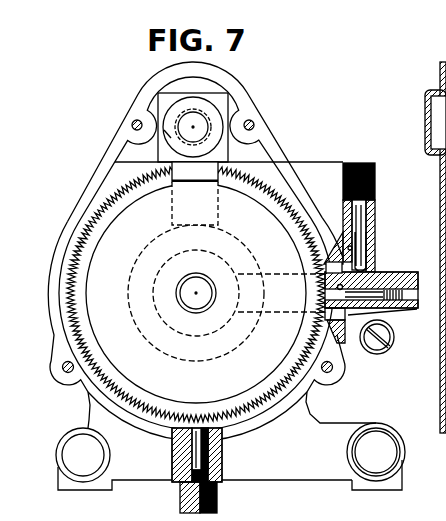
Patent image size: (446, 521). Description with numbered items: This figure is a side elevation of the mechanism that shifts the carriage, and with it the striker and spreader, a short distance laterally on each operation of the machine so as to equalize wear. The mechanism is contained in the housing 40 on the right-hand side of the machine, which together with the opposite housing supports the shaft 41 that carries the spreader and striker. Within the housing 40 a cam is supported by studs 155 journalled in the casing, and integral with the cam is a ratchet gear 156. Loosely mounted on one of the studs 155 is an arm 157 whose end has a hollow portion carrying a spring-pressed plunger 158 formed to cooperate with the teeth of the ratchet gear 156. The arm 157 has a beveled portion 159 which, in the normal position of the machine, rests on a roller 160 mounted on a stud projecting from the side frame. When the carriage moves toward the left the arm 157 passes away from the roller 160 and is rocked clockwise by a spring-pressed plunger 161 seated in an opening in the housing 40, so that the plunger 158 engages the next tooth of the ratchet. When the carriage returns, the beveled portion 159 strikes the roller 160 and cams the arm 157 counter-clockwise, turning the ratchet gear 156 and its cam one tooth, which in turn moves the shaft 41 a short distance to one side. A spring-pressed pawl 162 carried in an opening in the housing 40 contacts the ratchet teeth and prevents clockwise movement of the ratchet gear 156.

The housing 40 is at (249, 110).
The shaft 41 is at (208, 138).
The studs 155 is at (193, 297).
The ratchet gear 156 is at (287, 208).
The arm 157 is at (410, 275).
The spring-pressed plunger 158 is at (372, 287).
The beveled portion 159 is at (360, 314).
The roller 160 is at (392, 343).
The spring-pressed plunger 161 is at (362, 240).
The spring-pressed pawl 162 is at (197, 452).